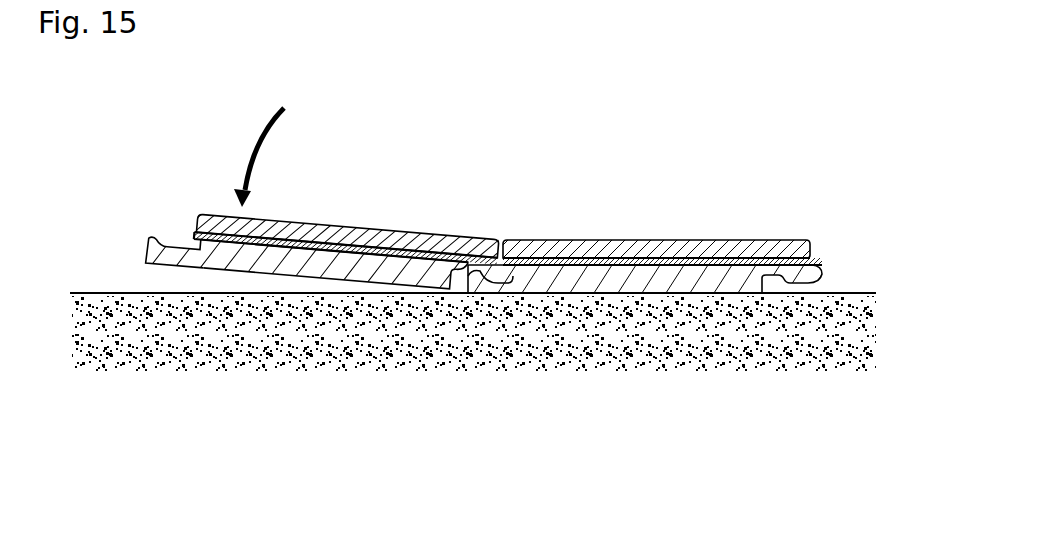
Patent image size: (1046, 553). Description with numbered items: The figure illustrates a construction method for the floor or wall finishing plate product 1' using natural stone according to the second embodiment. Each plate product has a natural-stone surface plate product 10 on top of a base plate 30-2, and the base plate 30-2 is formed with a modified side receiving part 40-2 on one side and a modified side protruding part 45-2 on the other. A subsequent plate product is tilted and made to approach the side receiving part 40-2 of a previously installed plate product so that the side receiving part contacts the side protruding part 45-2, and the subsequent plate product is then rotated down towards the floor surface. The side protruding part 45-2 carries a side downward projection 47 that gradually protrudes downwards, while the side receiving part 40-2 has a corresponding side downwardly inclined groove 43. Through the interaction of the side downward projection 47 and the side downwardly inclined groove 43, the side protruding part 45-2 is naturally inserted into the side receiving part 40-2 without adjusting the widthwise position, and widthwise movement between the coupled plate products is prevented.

The floor or wall finishing plate product 1' is at (499, 146).
The natural-stone surface plate product 10 is at (374, 212).
The base plate 30-2 is at (245, 298).
The side receiving part 40-2 is at (178, 250).
The side downwardly inclined groove 43 is at (500, 278).
The side protruding part 45-2 is at (822, 270).
The side downward projection 47 is at (462, 238).